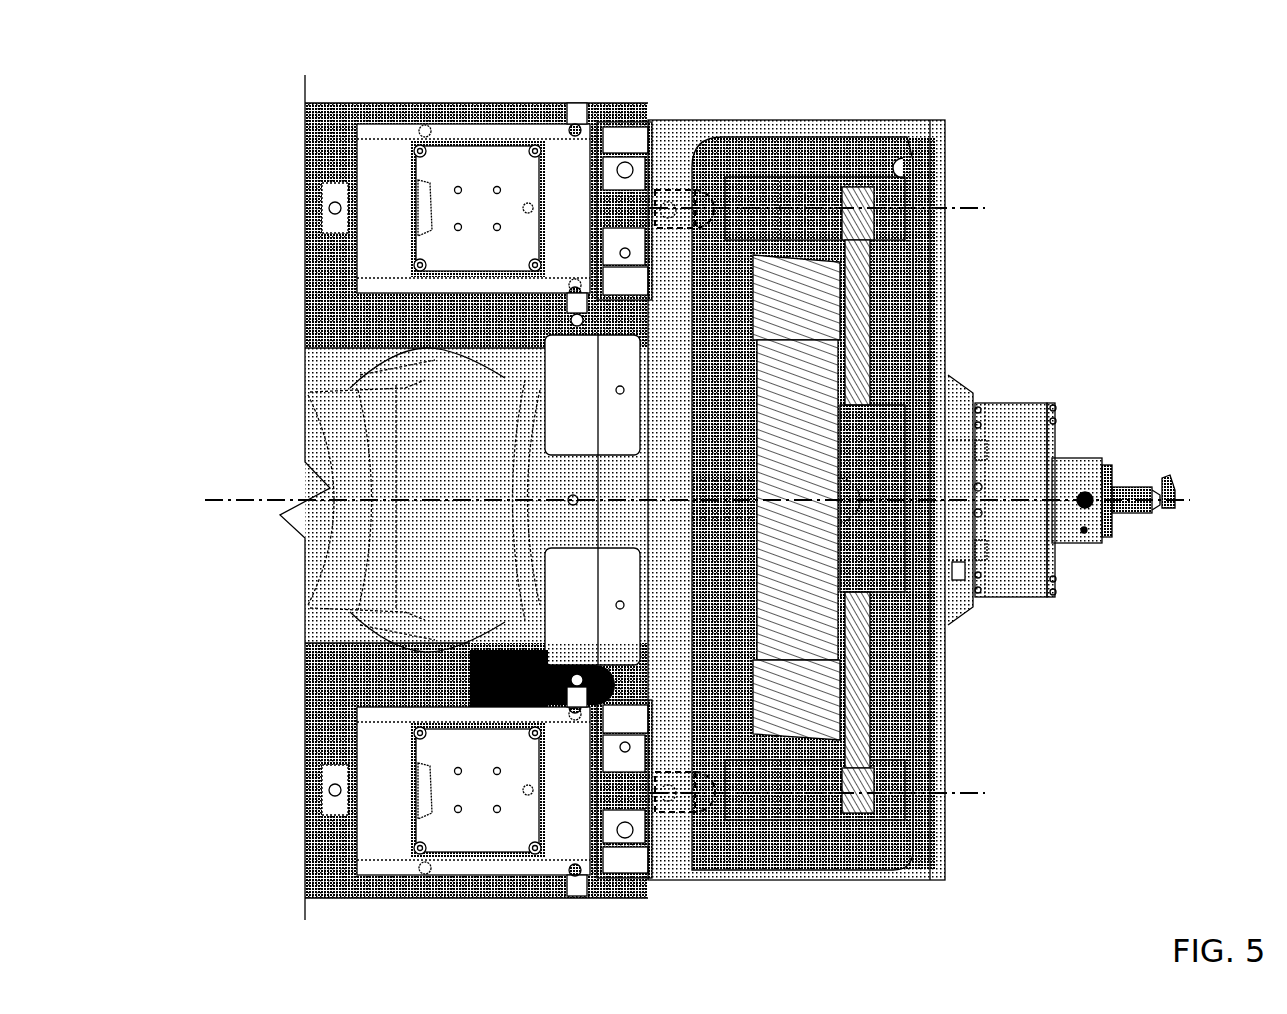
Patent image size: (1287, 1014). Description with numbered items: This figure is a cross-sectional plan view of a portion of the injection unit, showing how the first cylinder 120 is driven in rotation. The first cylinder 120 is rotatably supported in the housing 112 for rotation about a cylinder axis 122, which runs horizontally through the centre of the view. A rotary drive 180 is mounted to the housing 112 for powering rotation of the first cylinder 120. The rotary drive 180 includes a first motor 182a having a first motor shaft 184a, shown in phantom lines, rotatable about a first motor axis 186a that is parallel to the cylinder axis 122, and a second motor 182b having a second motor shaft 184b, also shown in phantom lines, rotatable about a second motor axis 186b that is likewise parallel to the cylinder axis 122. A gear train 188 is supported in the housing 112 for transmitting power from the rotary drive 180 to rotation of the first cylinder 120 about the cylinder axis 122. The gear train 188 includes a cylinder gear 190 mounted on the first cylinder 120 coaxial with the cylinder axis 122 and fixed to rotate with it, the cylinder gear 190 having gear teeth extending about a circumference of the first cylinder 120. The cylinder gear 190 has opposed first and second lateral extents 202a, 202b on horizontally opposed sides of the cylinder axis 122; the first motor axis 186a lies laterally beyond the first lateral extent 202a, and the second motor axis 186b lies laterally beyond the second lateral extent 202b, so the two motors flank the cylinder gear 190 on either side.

The housing 112 is at (925, 85).
The first cylinder 120 is at (890, 481).
The cylinder axis 122 is at (1190, 498).
The rotary drive 180 is at (322, 120).
The first motor 182a is at (458, 878).
The second motor 182b is at (470, 124).
The first motor shaft 184a is at (667, 812).
The second motor shaft 184b is at (667, 190).
The first motor axis 186a is at (960, 793).
The second motor axis 186b is at (960, 208).
The gear train 188 is at (820, 158).
The cylinder gear 190 is at (820, 398).
The first lateral extent 202a is at (808, 678).
The second lateral extent 202b is at (803, 322).